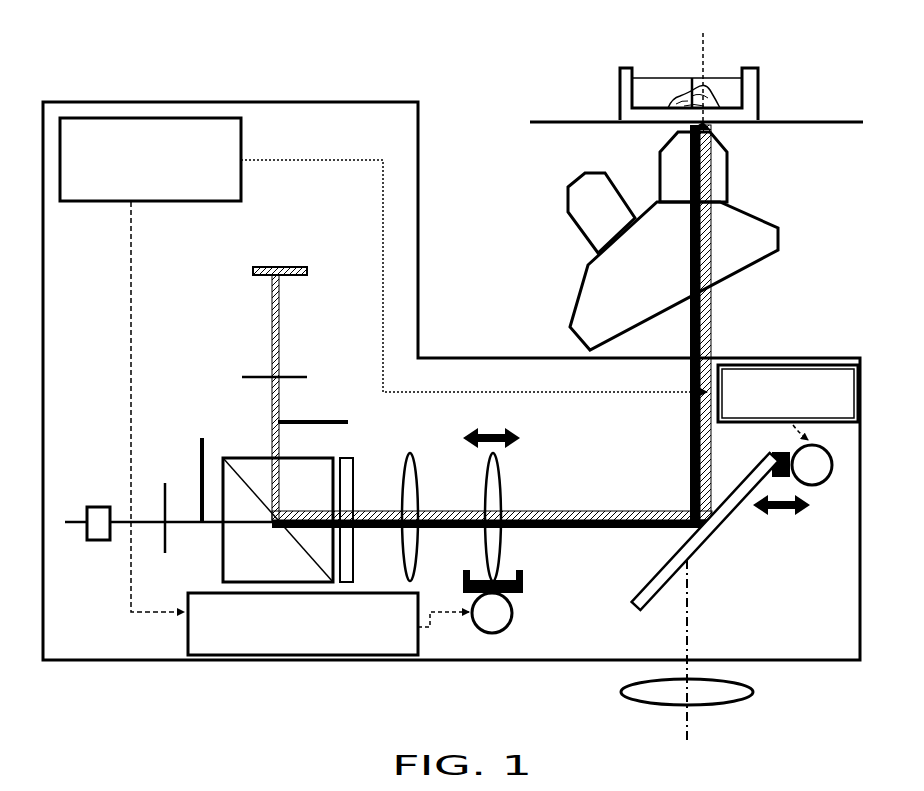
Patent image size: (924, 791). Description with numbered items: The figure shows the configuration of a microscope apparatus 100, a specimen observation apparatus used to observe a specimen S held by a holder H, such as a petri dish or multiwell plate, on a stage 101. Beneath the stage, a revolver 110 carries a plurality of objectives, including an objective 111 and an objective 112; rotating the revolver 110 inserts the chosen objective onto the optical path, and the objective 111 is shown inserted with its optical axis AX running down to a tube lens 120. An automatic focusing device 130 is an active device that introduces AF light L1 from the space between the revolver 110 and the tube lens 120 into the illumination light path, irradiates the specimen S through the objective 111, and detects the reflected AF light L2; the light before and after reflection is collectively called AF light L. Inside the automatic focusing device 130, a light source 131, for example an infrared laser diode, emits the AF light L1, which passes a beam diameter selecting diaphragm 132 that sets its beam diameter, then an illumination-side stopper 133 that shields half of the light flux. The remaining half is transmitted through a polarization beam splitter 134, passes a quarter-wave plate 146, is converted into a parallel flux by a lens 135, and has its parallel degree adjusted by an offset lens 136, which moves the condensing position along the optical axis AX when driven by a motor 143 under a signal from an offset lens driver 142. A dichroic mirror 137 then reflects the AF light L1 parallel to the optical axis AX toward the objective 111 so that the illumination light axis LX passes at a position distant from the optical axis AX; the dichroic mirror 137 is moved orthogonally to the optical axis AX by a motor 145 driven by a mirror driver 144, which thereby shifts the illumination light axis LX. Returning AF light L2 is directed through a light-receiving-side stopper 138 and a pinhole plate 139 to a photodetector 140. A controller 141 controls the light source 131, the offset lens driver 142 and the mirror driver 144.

The microscope apparatus 100 is at (208, 70).
The stage 101 is at (798, 121).
The revolver 110 is at (779, 240).
The objective 111 is at (728, 180).
The objective 112 is at (572, 225).
The tube lens 120 is at (752, 690).
The automatic focusing device 130 is at (317, 102).
The light source 131 is at (92, 507).
The beam diameter selecting diaphragm 132 is at (165, 482).
The illumination-side stopper 133 is at (202, 437).
The polarization beam splitter 134 is at (223, 560).
The lens 135 is at (404, 472).
The offset lens 136 is at (502, 482).
The dichroic mirror 137 is at (698, 553).
The light-receiving-side stopper 138 is at (312, 420).
The pinhole plate 139 is at (297, 376).
The photodetector 140 is at (283, 267).
The controller 141 is at (168, 202).
The offset lens driver 142 is at (375, 593).
The motor 143 is at (510, 628).
The mirror driver 144 is at (842, 423).
The motor 145 is at (817, 486).
The λ/4 plate 146 is at (350, 458).
The holder H is at (748, 70).
The specimen S is at (717, 86).
The illumination light axis LX is at (702, 40).
The AF light L is at (560, 325).
The AF light L1 is at (697, 308).
The AF light L2 is at (707, 328).
The optical axis AX is at (690, 627).